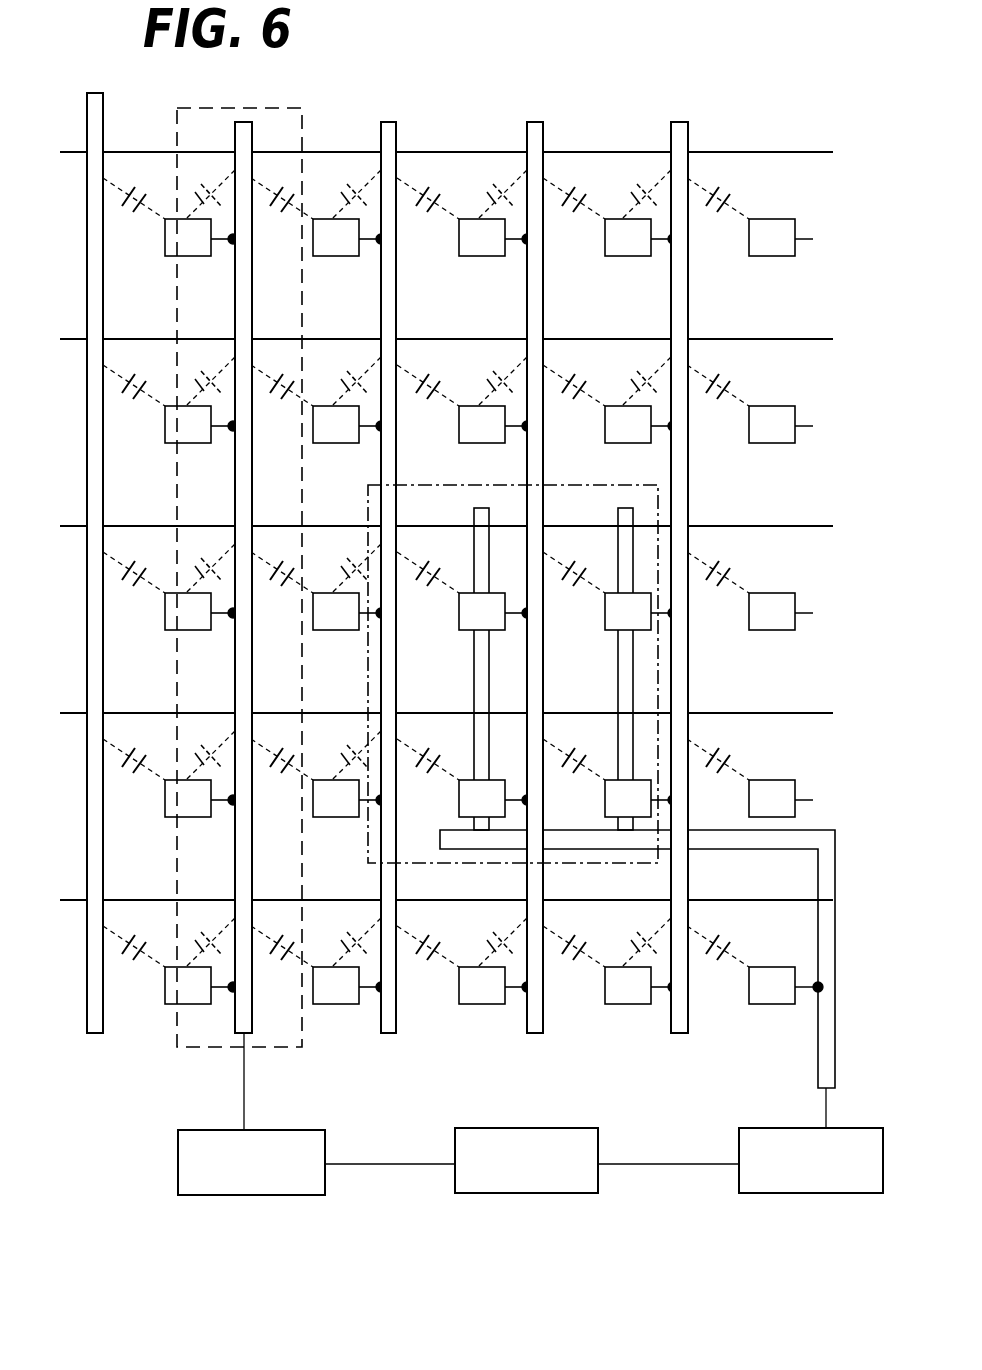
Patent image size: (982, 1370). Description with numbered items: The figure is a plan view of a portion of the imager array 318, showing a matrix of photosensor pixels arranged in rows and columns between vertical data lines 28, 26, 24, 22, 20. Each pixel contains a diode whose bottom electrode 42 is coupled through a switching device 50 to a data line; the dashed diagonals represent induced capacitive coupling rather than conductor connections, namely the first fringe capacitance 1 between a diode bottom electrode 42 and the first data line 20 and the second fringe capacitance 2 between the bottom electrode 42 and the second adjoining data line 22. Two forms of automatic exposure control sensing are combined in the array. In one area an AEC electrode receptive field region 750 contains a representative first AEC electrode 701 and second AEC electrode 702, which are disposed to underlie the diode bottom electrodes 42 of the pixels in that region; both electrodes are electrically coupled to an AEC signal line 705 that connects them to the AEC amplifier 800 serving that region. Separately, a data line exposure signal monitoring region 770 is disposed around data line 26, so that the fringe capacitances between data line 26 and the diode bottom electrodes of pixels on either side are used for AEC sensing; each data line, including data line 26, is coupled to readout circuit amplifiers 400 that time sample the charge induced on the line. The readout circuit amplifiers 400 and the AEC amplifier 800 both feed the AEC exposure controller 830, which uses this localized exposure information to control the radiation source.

The imager array 318 is at (472, 69).
The first fringe capacitance 1 is at (197, 188).
The second fringe capacitance 2 is at (123, 207).
The data line 28 is at (93, 1037).
The data line 26 is at (236, 1017).
The data line 24 is at (381, 1025).
The second adjoining data line 22 is at (527, 1025).
The first data line 20 is at (671, 1025).
The data line exposure signal monitoring region 770 is at (309, 1050).
The AEC electrode receptive field region 750 is at (563, 485).
The switching device 50 is at (659, 498).
The diode bottom electrode 42 is at (458, 617).
The second AEC electrode 702 is at (473, 646).
The first AEC electrode 701 is at (617, 646).
The AEC signal line 705 is at (618, 849).
The readout circuit amplifiers 400 is at (325, 1142).
The AEC exposure controller 830 is at (598, 1142).
The AEC amplifier 800 is at (739, 1175).